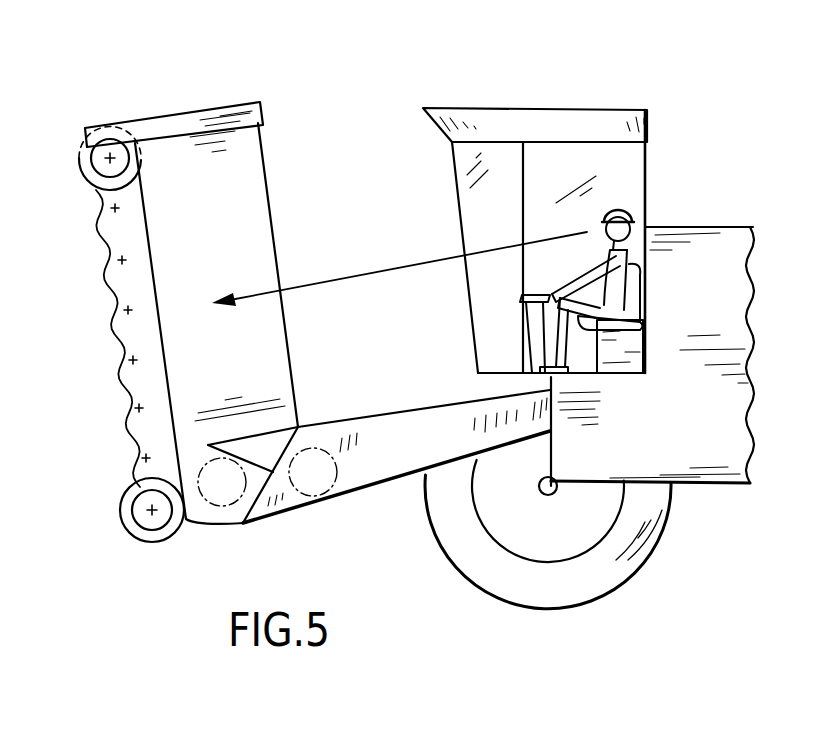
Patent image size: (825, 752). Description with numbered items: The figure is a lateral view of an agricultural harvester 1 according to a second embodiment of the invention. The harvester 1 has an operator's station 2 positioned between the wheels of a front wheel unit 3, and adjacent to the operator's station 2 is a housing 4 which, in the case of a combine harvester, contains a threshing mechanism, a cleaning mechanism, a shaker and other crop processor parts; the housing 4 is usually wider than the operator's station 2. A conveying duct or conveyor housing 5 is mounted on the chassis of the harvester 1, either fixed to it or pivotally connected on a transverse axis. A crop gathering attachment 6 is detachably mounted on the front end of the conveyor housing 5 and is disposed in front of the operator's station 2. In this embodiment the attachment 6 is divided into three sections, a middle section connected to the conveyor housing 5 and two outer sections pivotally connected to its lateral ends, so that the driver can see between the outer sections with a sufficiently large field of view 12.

The agricultural harvester 1 is at (434, 326).
The operator's station 2 is at (523, 120).
The front wheel unit 3 is at (632, 560).
The housing 4 is at (733, 308).
The conveyor housing 5 is at (370, 470).
The crop gathering attachment 6 is at (291, 162).
The field of view 12 is at (380, 270).